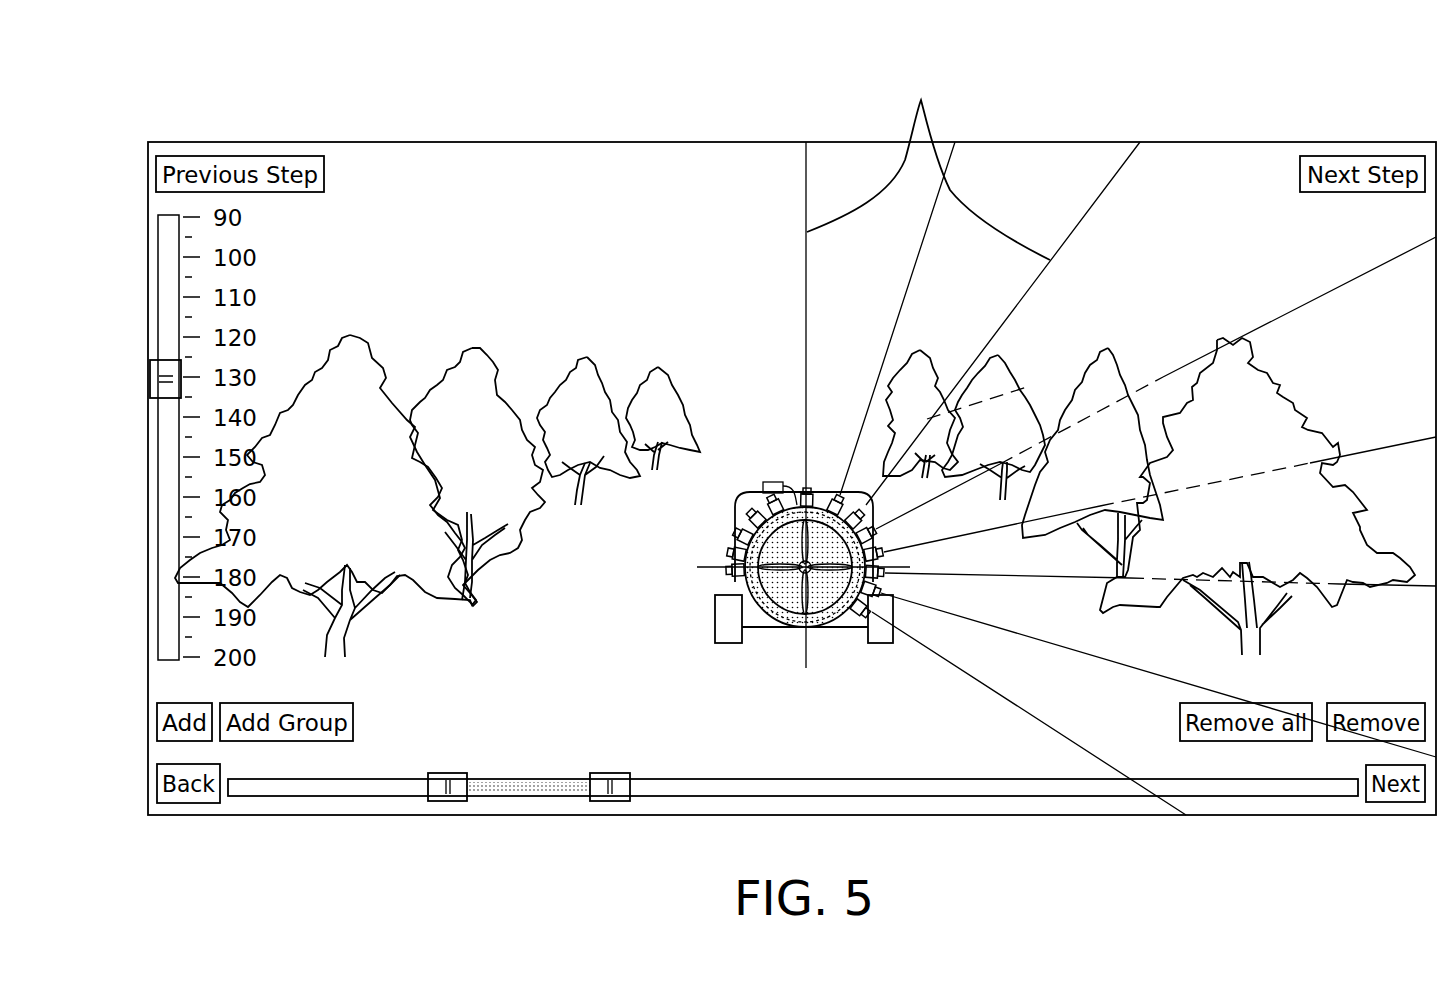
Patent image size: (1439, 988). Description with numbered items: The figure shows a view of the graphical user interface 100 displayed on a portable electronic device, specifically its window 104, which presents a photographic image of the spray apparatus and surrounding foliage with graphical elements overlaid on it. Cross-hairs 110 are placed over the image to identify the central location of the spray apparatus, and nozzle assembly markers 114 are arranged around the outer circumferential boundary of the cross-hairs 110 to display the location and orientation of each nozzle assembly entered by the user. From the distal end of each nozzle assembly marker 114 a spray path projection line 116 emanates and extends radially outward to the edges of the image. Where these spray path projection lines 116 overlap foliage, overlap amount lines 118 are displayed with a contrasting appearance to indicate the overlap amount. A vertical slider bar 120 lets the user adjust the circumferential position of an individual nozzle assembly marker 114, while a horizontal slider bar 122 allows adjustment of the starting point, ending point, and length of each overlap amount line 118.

The graphical user interface 100 is at (788, 419).
The window 104 is at (792, 478).
The cross-hairs 110 is at (804, 505).
The nozzle assembly markers 114 is at (805, 482).
The spray path projection lines 116 is at (935, 210).
The overlap amount lines 118 is at (1038, 440).
The vertical slider bar 120 is at (152, 378).
The horizontal slider bar 122 is at (545, 797).